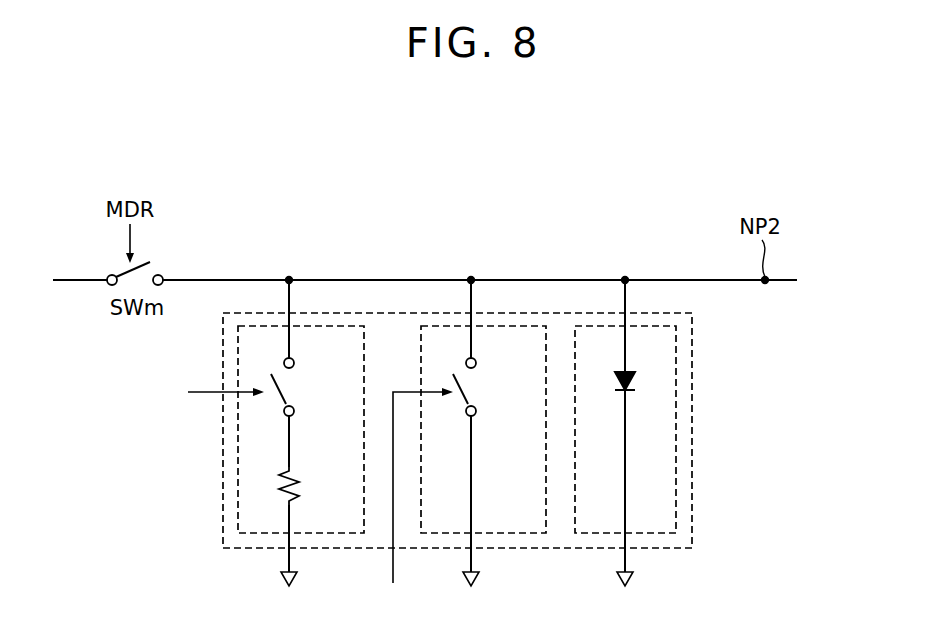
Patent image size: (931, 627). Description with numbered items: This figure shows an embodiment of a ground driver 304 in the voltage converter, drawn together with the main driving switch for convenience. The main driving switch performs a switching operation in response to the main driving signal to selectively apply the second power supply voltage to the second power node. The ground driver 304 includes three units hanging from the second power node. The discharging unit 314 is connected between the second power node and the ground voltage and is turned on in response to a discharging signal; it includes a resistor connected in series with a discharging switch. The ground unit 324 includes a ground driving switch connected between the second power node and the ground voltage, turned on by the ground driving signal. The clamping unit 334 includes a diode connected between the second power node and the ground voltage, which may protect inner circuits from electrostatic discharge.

The ground driver 304 is at (692, 428).
The discharging unit 314 is at (240, 484).
The ground unit 324 is at (527, 533).
The clamping unit 334 is at (676, 492).